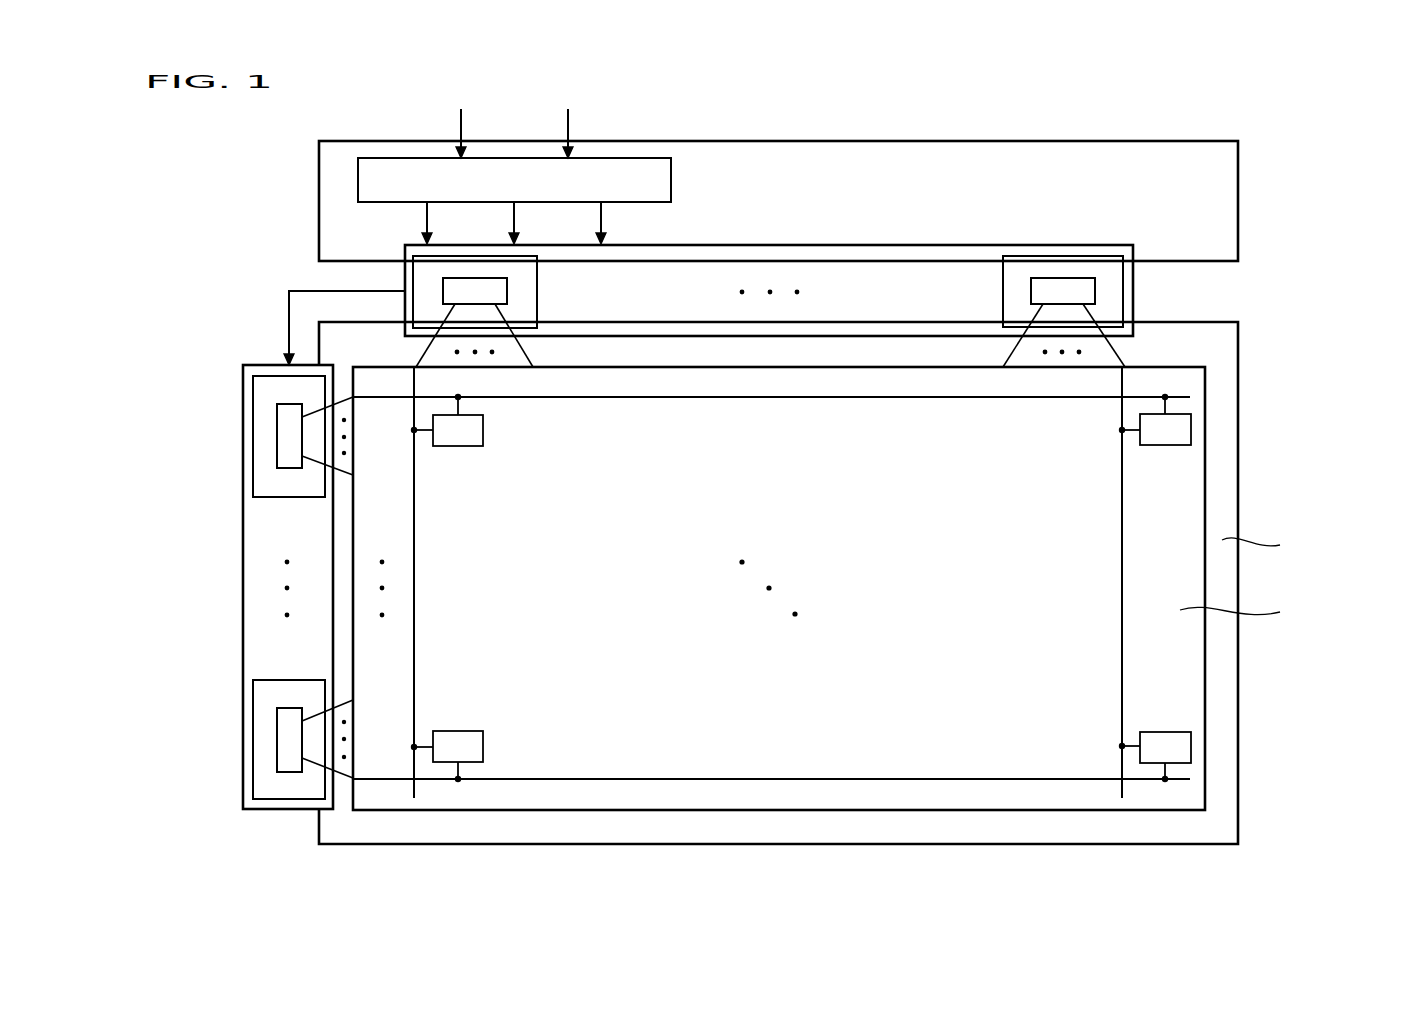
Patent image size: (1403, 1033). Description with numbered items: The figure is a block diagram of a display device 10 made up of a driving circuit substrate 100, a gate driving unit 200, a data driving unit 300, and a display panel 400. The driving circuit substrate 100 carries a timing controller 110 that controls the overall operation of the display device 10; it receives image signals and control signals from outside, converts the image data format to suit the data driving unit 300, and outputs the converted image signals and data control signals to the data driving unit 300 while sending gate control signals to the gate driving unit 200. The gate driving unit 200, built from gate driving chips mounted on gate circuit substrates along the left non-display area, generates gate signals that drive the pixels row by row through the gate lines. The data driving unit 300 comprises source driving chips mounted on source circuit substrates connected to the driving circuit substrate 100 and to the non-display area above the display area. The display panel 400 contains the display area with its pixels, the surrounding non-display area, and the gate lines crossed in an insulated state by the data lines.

The display device 10 is at (1266, 82).
The driving circuit substrate 100 is at (1125, 141).
The timing controller 110 is at (671, 178).
The gate driving unit 200 is at (243, 393).
The data driving unit 300 is at (1133, 290).
The display panel 400 is at (1315, 531).